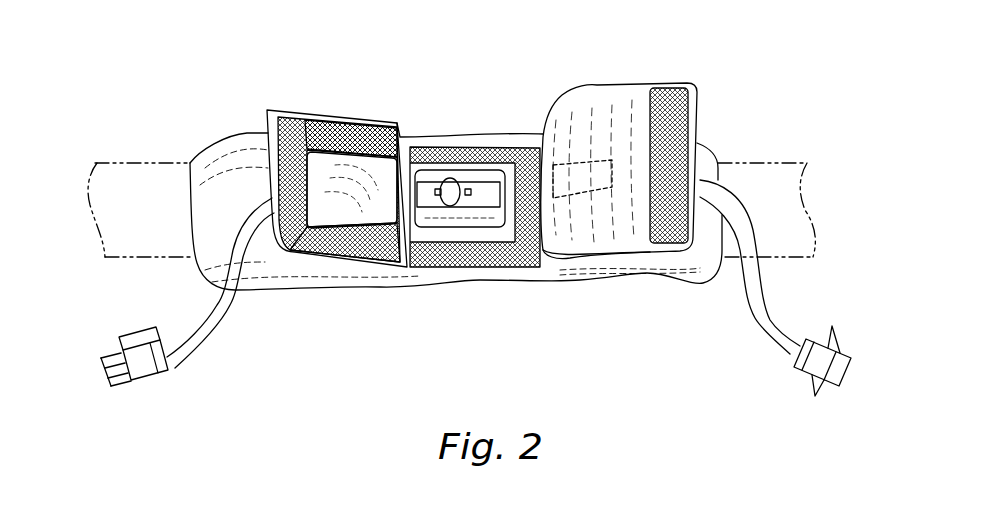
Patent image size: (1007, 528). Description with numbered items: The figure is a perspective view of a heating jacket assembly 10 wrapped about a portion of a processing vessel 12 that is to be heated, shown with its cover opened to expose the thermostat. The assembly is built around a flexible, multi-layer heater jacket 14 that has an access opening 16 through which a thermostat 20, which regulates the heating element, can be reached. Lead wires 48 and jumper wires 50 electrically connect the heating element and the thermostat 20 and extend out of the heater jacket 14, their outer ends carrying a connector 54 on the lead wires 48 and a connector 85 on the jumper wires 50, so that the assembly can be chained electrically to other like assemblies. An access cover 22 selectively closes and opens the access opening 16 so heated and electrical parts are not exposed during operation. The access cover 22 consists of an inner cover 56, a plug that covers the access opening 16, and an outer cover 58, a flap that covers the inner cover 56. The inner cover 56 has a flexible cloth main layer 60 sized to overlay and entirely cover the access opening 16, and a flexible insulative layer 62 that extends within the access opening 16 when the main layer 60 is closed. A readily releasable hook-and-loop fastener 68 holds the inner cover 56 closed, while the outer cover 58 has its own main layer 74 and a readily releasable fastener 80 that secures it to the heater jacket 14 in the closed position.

The heating jacket assembly 10 is at (498, 243).
The processing vessel 12 is at (762, 163).
The heater jacket 14 is at (254, 137).
The access opening 16 is at (475, 207).
The thermostat 20 is at (459, 180).
The access cover 22 is at (625, 189).
The lead wires 48 is at (199, 350).
The jumper wires 50 is at (772, 343).
The connector 54 is at (142, 382).
The inner cover 56 is at (337, 212).
The outer cover 58 is at (629, 258).
The main layer 60 is at (318, 261).
The insulative layer 62 is at (362, 157).
The fastener 68 is at (329, 121).
The main layer 74 is at (600, 253).
The fastener 80 is at (675, 83).
The connector 85 is at (849, 378).